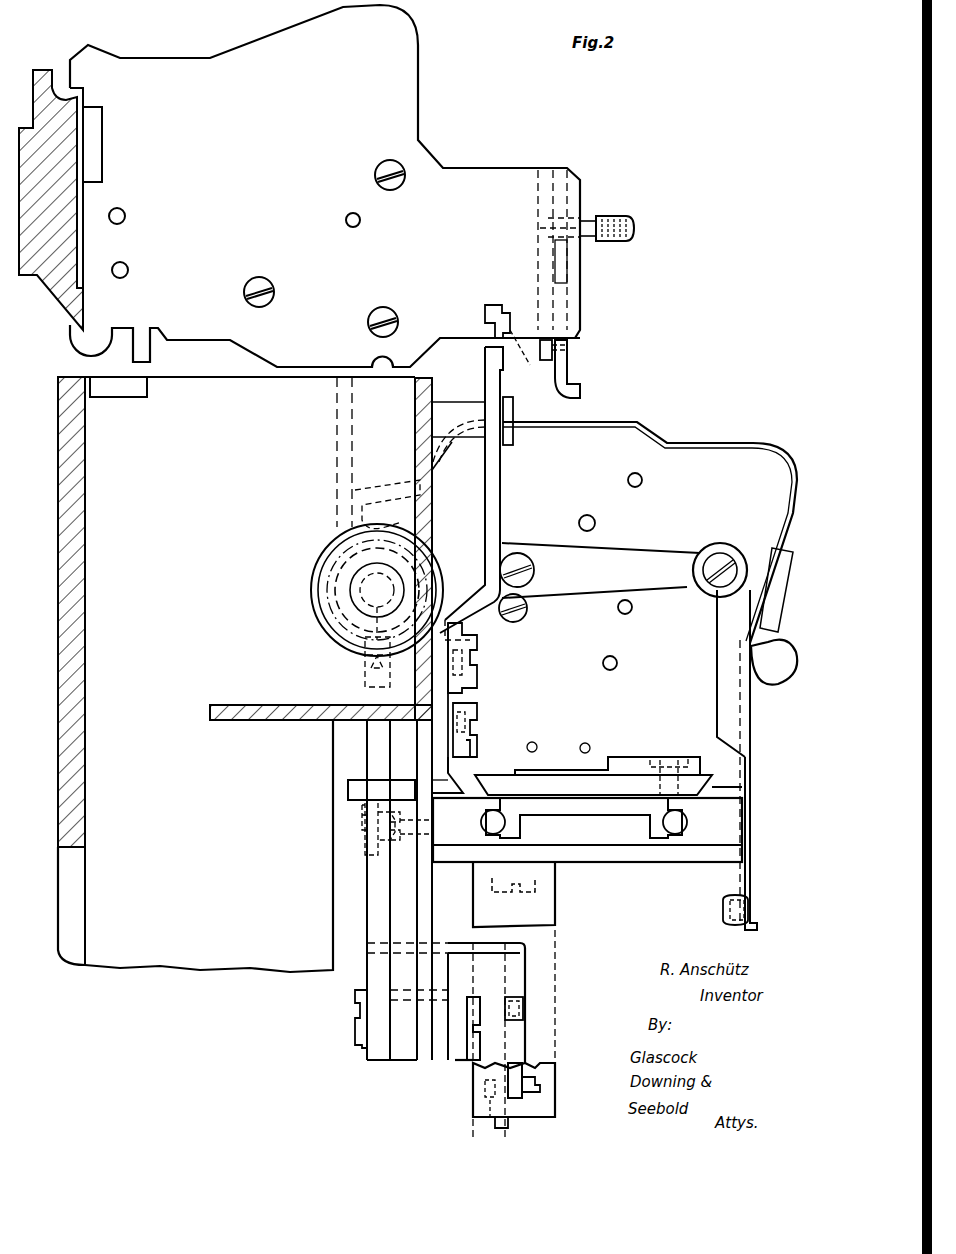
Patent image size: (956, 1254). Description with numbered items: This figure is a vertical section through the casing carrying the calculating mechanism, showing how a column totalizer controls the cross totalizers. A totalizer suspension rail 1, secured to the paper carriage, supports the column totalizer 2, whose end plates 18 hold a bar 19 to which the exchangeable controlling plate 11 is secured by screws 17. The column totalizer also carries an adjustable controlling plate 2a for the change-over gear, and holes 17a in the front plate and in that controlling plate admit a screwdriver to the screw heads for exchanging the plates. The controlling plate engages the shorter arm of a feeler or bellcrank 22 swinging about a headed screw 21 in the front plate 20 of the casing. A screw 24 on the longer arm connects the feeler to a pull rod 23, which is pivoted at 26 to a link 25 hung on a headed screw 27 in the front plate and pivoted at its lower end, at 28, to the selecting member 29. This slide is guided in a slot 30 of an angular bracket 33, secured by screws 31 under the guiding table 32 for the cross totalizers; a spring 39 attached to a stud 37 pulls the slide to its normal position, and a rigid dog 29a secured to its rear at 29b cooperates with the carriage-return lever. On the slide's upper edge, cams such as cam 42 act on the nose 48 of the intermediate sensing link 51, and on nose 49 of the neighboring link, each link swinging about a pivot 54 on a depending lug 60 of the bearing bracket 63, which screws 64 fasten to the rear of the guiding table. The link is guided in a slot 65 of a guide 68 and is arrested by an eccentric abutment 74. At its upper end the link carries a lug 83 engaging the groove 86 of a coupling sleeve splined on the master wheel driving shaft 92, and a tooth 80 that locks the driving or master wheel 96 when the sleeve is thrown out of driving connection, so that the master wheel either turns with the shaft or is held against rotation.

The totalizer suspension rail 1 is at (60, 290).
The column totalizer 2 is at (162, 72).
The end plate 18 is at (393, 105).
The controlling plate 11 is at (545, 313).
The bar 19 is at (486, 311).
The hole 17a is at (578, 338).
The adjustable controlling plate 2a is at (552, 355).
The screw 17 is at (552, 368).
The front plate 20 is at (440, 412).
The headed screw 21 is at (513, 409).
The feeler or bellcrank 22 is at (497, 506).
The driving or master wheel 96 is at (325, 553).
The main or master wheel driving shaft 92 is at (360, 590).
The groove 86 is at (320, 600).
The lug 83 is at (323, 641).
The tooth 80 is at (357, 673).
The headed screw 27 is at (465, 631).
The screw 24 is at (478, 661).
The pull rod 23 is at (457, 708).
The pivot 26 is at (475, 742).
The link 25 is at (440, 807).
The guiding table 32 is at (705, 852).
The angular bracket 33 is at (543, 918).
The screw 31 is at (545, 888).
The intermediate sensing link 51 is at (377, 922).
The bearing bracket 63 is at (400, 889).
The depending lug 60 is at (403, 1038).
The guide 68 is at (357, 792).
The slot 65 is at (383, 780).
The screw 64 is at (390, 839).
The eccentric abutment 74 is at (380, 852).
The pivot 54 is at (360, 1005).
The nose 48 is at (510, 987).
The nose 49 is at (513, 995).
The cam 42 is at (523, 1013).
The pivot 28 is at (475, 1063).
The selecting member 29 is at (460, 1040).
The slot 30 is at (518, 1102).
The stud 37 is at (525, 1080).
The spring 39 is at (537, 1080).
The attachment point of dog 29b is at (493, 1097).
The rigid dog 29a is at (517, 1117).